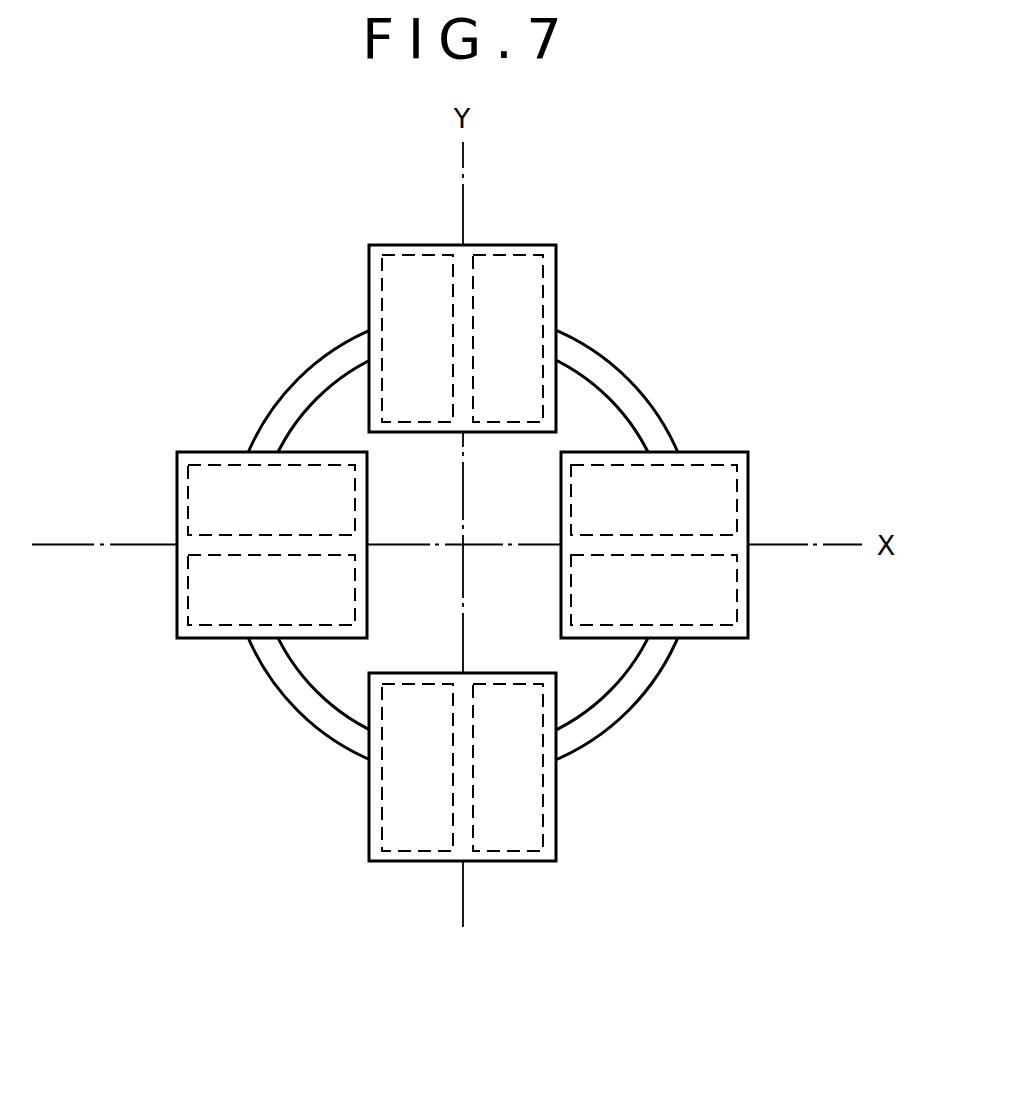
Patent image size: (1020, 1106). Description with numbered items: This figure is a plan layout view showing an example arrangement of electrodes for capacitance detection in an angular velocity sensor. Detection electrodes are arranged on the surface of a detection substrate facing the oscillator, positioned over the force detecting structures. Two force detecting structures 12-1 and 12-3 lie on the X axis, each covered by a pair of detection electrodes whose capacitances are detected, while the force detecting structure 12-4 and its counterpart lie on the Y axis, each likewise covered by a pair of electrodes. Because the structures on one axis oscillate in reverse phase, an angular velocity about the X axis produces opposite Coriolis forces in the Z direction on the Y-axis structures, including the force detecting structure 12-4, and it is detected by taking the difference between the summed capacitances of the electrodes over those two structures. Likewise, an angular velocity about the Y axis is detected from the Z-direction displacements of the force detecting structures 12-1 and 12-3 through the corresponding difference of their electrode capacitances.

The force detecting structure 12-1 is at (733, 457).
The force detecting structure 12-3 is at (207, 460).
The force detecting structure 12-4 is at (548, 302).